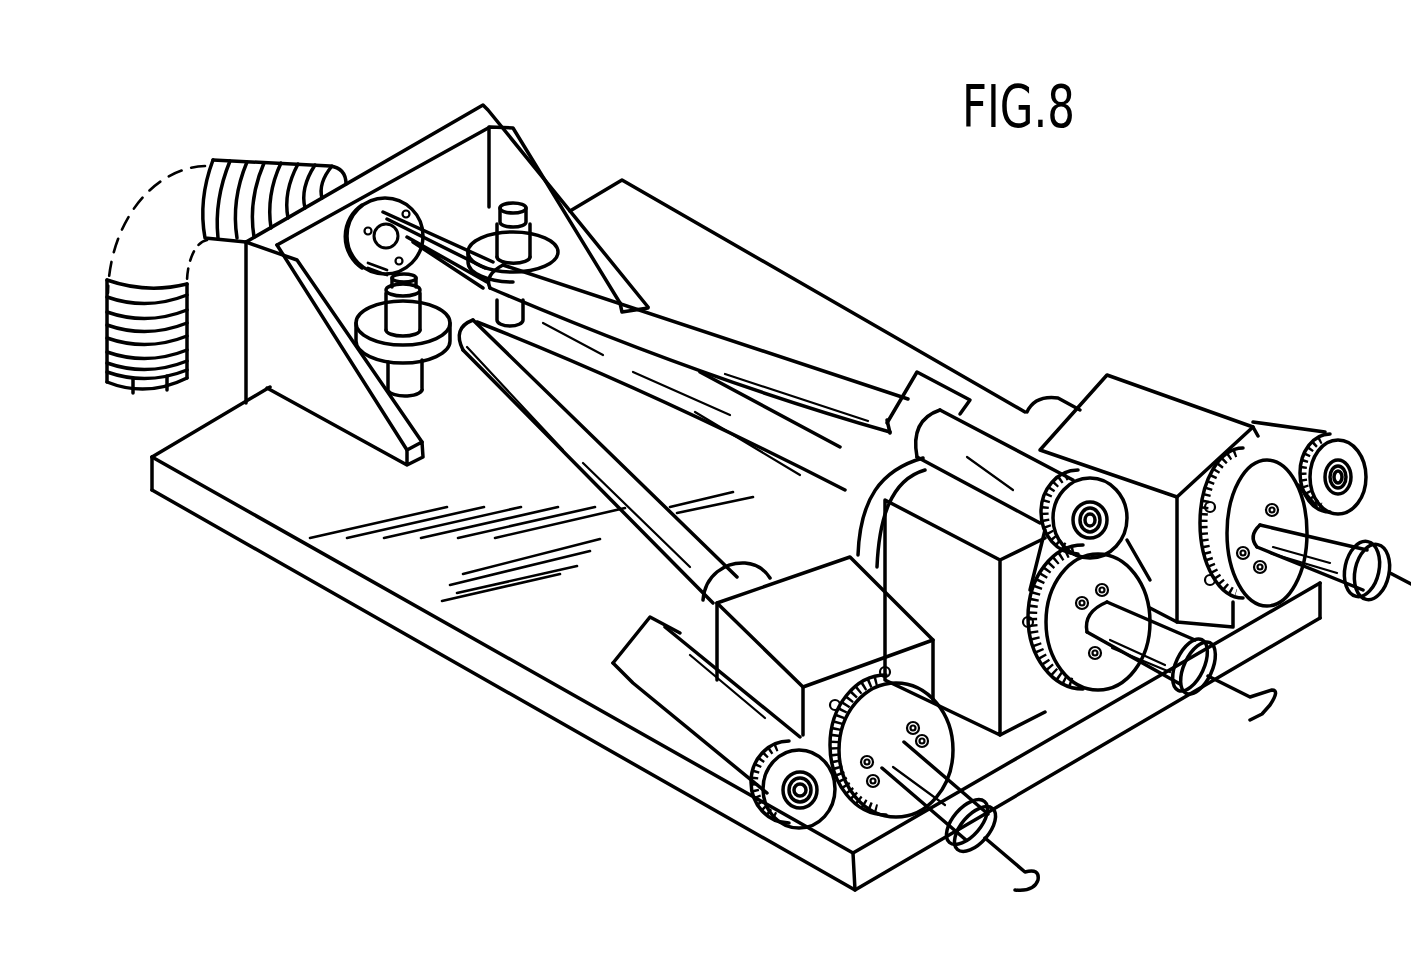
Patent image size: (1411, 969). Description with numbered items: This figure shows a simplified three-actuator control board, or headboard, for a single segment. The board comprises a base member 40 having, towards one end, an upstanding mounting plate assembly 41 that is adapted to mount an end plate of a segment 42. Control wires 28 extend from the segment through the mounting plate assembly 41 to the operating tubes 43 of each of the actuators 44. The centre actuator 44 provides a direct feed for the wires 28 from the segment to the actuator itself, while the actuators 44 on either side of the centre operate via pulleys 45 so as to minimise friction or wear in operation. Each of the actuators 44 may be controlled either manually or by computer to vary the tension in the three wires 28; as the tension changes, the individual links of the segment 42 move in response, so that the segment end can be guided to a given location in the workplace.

The control wires 28 is at (470, 292).
The base member 40 is at (423, 558).
The mounting plate assembly 41 is at (313, 352).
The segment 42 is at (252, 190).
The operating tubes 43 is at (690, 390).
The actuators 44 is at (1168, 423).
The pulleys 45 is at (548, 252).